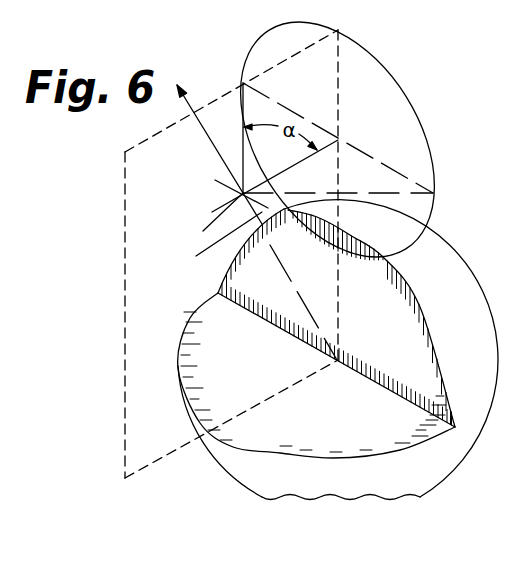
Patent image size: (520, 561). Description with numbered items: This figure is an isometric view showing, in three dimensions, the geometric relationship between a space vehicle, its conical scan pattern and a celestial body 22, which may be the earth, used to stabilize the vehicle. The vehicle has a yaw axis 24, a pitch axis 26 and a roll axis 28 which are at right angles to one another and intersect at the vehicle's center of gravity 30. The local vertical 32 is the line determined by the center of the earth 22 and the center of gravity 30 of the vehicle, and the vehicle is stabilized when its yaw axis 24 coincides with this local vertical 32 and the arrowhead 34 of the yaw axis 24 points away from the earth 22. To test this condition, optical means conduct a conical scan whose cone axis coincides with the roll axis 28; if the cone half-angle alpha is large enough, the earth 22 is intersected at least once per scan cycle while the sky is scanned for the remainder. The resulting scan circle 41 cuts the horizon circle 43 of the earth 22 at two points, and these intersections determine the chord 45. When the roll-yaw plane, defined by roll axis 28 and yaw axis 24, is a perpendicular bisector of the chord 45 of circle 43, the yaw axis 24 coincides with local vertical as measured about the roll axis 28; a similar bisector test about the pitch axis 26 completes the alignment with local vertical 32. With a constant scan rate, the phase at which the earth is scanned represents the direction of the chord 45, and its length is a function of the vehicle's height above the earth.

The celestial body 22 is at (408, 489).
The yaw axis 24 is at (209, 142).
The pitch axis 26 is at (213, 241).
The roll axis 28 is at (220, 206).
The center of gravity 30 is at (209, 218).
The local vertical 32 is at (284, 268).
The arrowhead 34 is at (179, 84).
The scan circle 41 is at (423, 122).
The horizon circle 43 is at (426, 308).
The chord 45 is at (347, 236).